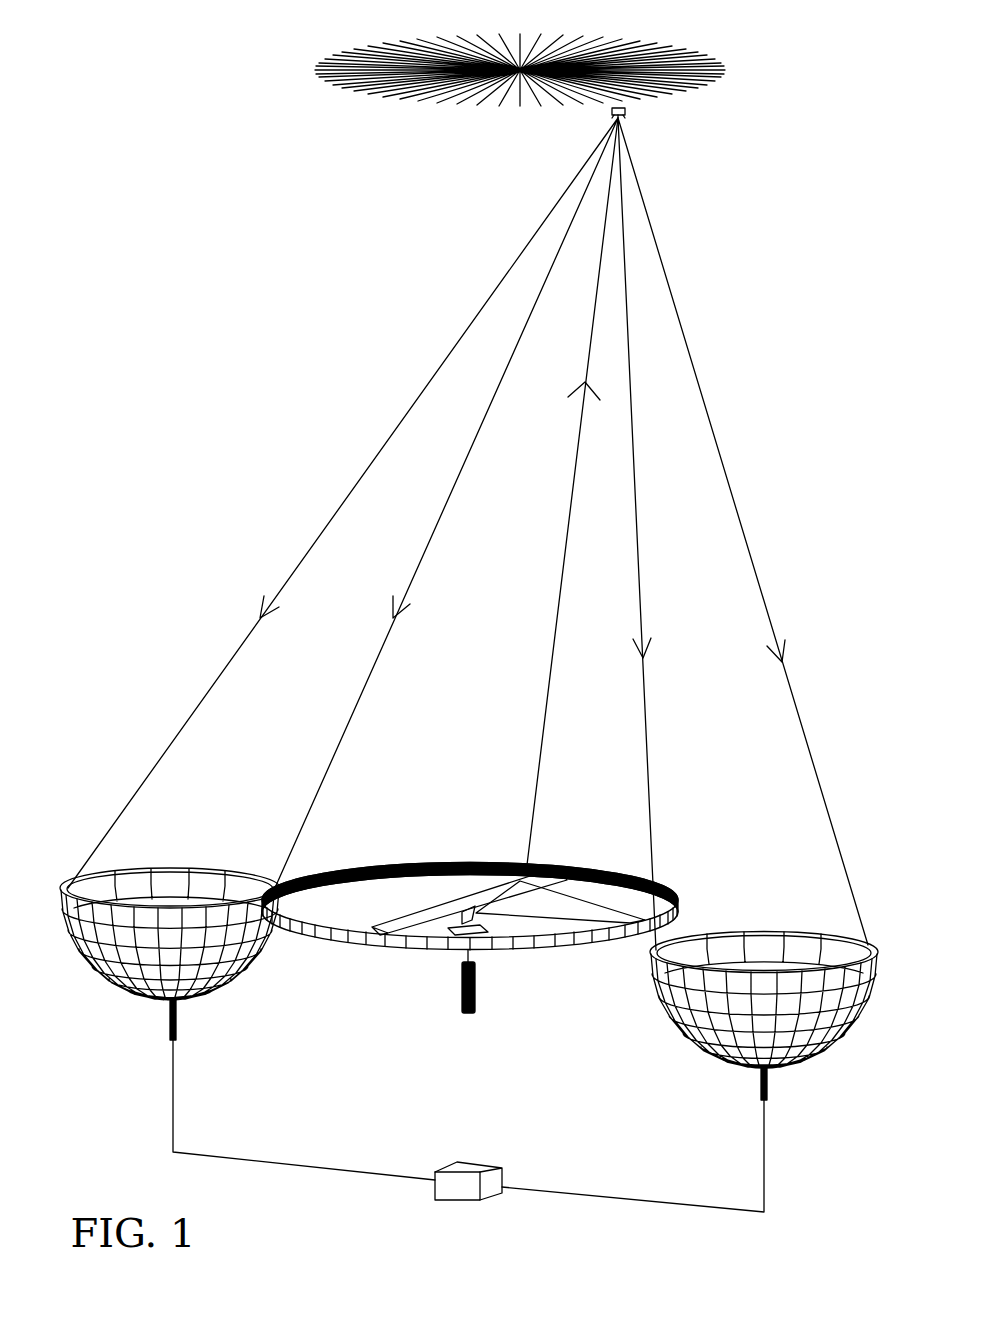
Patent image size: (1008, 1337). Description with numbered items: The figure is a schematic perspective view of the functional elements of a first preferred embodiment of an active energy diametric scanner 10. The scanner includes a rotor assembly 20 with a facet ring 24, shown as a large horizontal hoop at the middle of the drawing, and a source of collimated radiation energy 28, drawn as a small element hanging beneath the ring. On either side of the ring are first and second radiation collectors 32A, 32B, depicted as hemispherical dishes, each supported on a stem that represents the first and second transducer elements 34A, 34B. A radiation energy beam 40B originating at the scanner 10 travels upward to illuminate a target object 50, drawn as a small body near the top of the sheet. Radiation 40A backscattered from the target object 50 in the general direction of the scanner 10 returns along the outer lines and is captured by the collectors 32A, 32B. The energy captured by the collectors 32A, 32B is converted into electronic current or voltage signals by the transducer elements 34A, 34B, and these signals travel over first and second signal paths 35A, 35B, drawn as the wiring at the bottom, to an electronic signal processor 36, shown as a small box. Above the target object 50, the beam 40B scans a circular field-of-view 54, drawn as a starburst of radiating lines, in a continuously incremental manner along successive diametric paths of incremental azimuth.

The active energy diametric scanner 10 is at (243, 400).
The rotor assembly 20 is at (378, 853).
The facet ring 24 is at (440, 862).
The source of collimated radiation energy 28 is at (478, 1007).
The first radiation collector 32A is at (143, 1001).
The second radiation collector 32B is at (718, 1055).
The first transducer element 34A is at (180, 1028).
The second transducer element 34B is at (768, 1082).
The first signal path 35A is at (175, 1108).
The second signal path 35B is at (765, 1150).
The electronic signal processor 36 is at (487, 1192).
The backscattered radiation 40A is at (145, 783).
The radiation energy beam 40B is at (548, 690).
The target object 50 is at (612, 113).
The circular field-of-view 54 is at (318, 78).